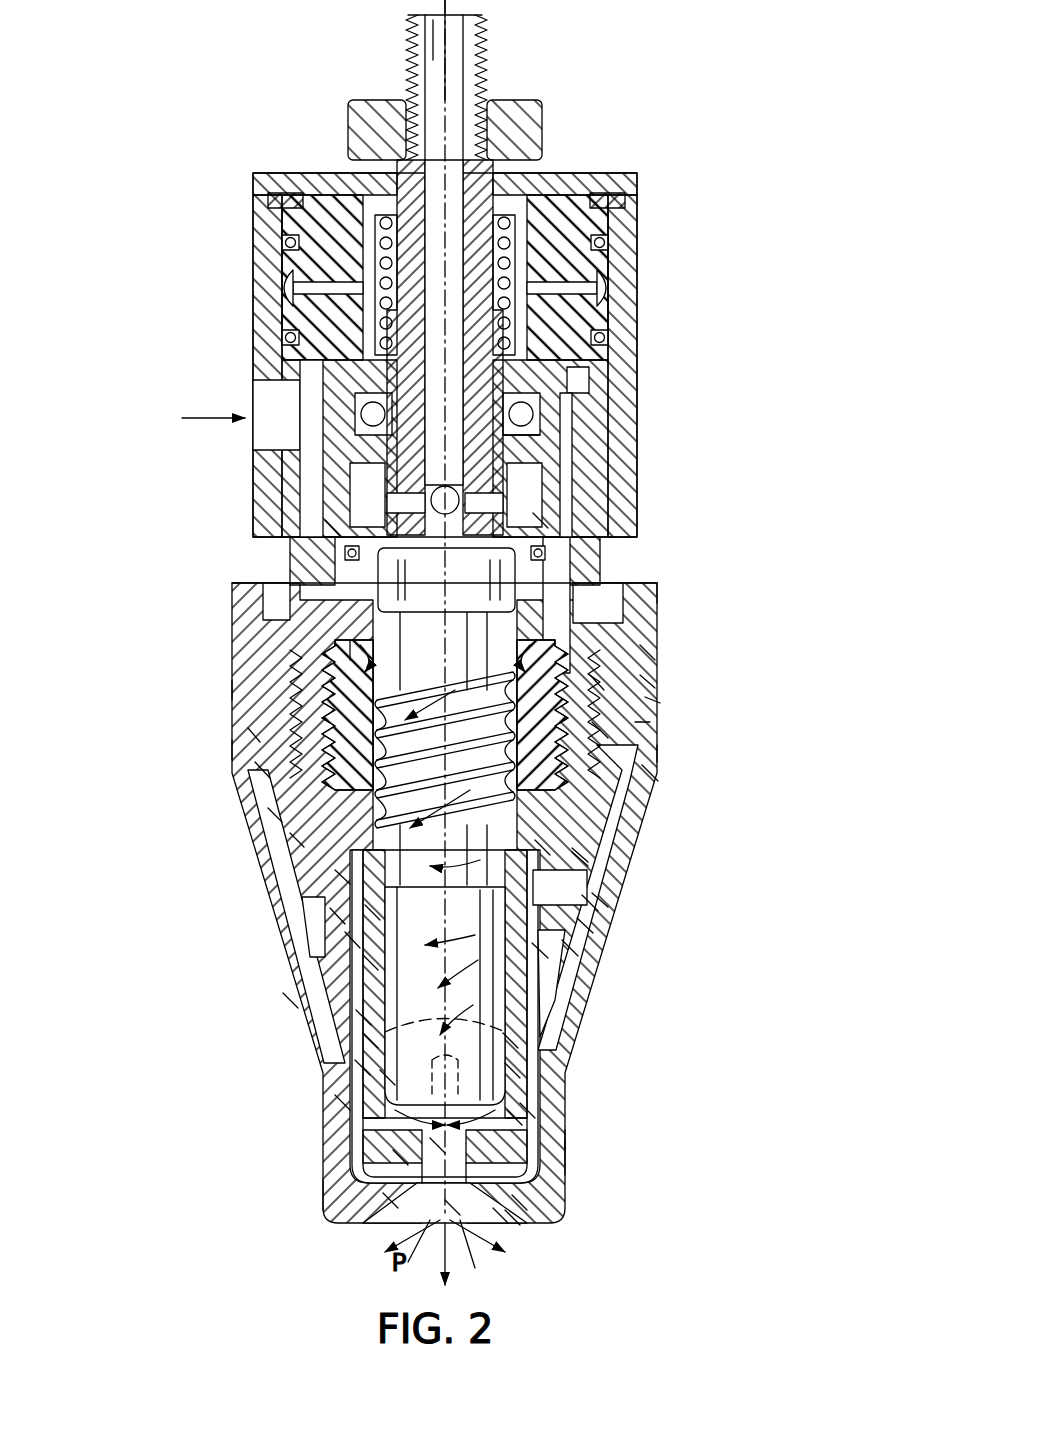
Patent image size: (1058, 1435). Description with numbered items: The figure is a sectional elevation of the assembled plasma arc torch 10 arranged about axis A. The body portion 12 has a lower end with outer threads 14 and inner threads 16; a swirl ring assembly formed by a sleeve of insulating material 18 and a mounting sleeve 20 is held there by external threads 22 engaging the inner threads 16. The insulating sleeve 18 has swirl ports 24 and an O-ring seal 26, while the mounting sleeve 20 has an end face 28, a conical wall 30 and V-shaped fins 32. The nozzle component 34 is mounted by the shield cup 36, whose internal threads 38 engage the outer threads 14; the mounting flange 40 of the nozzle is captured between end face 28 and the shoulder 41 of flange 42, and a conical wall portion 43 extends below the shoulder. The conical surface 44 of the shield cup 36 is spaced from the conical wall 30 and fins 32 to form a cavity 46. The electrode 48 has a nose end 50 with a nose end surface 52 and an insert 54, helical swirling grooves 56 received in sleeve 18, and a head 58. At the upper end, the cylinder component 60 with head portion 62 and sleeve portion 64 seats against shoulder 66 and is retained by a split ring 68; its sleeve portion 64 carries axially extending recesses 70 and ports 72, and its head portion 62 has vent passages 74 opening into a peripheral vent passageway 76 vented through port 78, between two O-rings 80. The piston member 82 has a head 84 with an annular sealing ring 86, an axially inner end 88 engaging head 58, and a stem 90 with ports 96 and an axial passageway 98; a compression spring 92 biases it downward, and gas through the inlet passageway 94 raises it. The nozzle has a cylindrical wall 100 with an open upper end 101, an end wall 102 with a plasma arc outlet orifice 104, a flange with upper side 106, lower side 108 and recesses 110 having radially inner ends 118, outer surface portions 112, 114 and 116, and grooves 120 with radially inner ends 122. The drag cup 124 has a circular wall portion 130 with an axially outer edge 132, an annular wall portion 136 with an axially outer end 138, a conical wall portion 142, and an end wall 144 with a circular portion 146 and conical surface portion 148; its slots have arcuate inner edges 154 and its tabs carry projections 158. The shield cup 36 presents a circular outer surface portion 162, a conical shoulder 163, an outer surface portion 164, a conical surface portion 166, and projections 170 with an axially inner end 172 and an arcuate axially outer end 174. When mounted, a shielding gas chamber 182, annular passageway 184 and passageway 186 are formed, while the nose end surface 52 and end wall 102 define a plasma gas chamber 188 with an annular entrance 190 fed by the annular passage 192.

The plasma arc torch 10 is at (772, 157).
The body portion 12 is at (652, 375).
The outer threads 14 is at (565, 673).
The inner threads 16 is at (623, 708).
The sleeve of insulating material 18 is at (547, 623).
The mounting sleeve 20 is at (580, 855).
The external threads 22 is at (597, 683).
The swirl ports 24 is at (357, 648).
The O-ring seal 26 is at (345, 554).
The end face 28 is at (335, 917).
The conical wall 30 is at (372, 912).
The V-shaped fins 32 is at (395, 870).
The nozzle component 34 is at (614, 1140).
The shield cup 36 is at (661, 603).
The internal threads 38 is at (600, 730).
The mounting flange 40 is at (585, 925).
The shoulder 41 is at (570, 948).
The flange 42 is at (540, 950).
The conical wall portion 43 is at (370, 963).
The conical surface 44 is at (600, 900).
The cavity 46 is at (600, 812).
The electrode 48 is at (513, 1070).
The nose end 50 is at (387, 1078).
The nose end surface 52 is at (437, 1145).
The insert 54 is at (343, 1102).
The helical swirling grooves 56 is at (255, 735).
The head 58 is at (505, 580).
The cylinder component 60 is at (585, 377).
The head portion 62 is at (613, 318).
The sleeve portion 64 is at (547, 455).
The shoulder 66 is at (640, 338).
The split ring 68 is at (600, 198).
The axially extending recesses 70 is at (333, 528).
The ports 72 is at (352, 492).
The vent passages 74 is at (615, 250).
The peripheral vent passageway 76 is at (625, 280).
The port 78 is at (275, 292).
The O-rings 80 is at (288, 243).
The piston member 82 is at (605, 468).
The head 84 is at (302, 378).
The annular sealing ring 86 is at (565, 436).
The axially inner end 88 is at (540, 520).
The stem 90 is at (489, 188).
The compression spring 92 is at (387, 293).
The inlet passageway 94 is at (258, 433).
The ports 96 is at (436, 490).
The axial passageway 98 is at (433, 52).
The axis A is at (447, 80).
The cylindrical wall 100 is at (535, 1080).
The upper end 101 is at (542, 848).
The end wall 102 is at (507, 1187).
The plasma arc outlet orifice 104 is at (387, 1182).
The upper side 106 is at (390, 902).
The lower side 108 is at (352, 940).
The recesses 110 is at (360, 918).
The first cylindrical surface portion 112 is at (322, 987).
The conical surface portion 114 is at (363, 1017).
The second cylindrical surface portion 116 is at (363, 1067).
The radially inner end 118 is at (590, 903).
The grooves 120 is at (342, 876).
The radially inner ends 122 is at (580, 858).
The drag cup 124 is at (307, 1190).
The circular wall portion 130 is at (662, 753).
The axially outer edge 132 is at (653, 700).
The annular wall portion 136 is at (566, 1158).
The axially outer end 138 is at (520, 1202).
The conical wall portion 142 is at (290, 1000).
The end wall 144 is at (513, 1218).
The circular portion 146 is at (453, 1207).
The conical surface portion 148 is at (500, 1215).
The arcuate inner edge 154 is at (297, 840).
The projection 158 is at (643, 722).
The circular outer surface portion 162 is at (647, 653).
The conical shoulder 163 is at (647, 680).
The outer surface portion 164 is at (650, 773).
The conical surface portion 166 is at (275, 815).
The projections 170 is at (232, 750).
The axially inner end 172 is at (240, 690).
The arcuate axially outer end 174 is at (262, 770).
The shielding gas chamber 182 is at (510, 1040).
The annular passageway 184 is at (400, 1157).
The passageway 186 is at (390, 1200).
The plasma gas chamber 188 is at (528, 1110).
The annular entrance 190 is at (515, 1117).
The annular passage 192 is at (370, 1040).